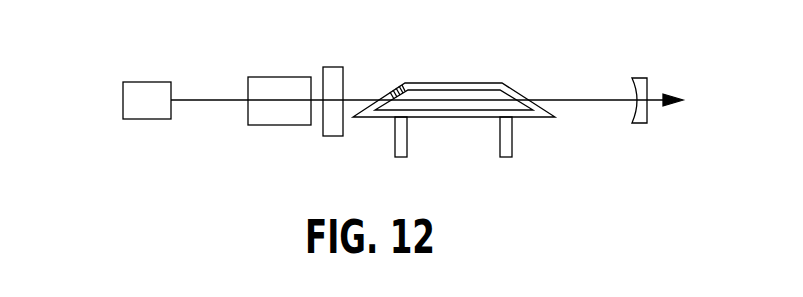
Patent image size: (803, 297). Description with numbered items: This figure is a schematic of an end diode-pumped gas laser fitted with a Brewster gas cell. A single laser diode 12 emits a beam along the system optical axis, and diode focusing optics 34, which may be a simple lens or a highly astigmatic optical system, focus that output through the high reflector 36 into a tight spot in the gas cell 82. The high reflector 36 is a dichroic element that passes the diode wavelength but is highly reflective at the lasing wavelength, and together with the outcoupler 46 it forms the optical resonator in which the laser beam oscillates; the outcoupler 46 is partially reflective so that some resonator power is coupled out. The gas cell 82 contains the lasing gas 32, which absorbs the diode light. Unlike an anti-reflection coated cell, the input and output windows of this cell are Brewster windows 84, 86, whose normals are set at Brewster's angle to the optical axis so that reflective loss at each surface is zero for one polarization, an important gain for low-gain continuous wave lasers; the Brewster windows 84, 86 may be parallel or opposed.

The laser diode 12 is at (123, 100).
The diode focusing optics 34 is at (280, 77).
The high reflector 36 is at (330, 67).
The gas cell 82 is at (455, 83).
The Brewster window 86 is at (517, 92).
The Brewster window 84 is at (397, 86).
The lasing gas 32 is at (460, 104).
The outcoupler 46 is at (640, 123).